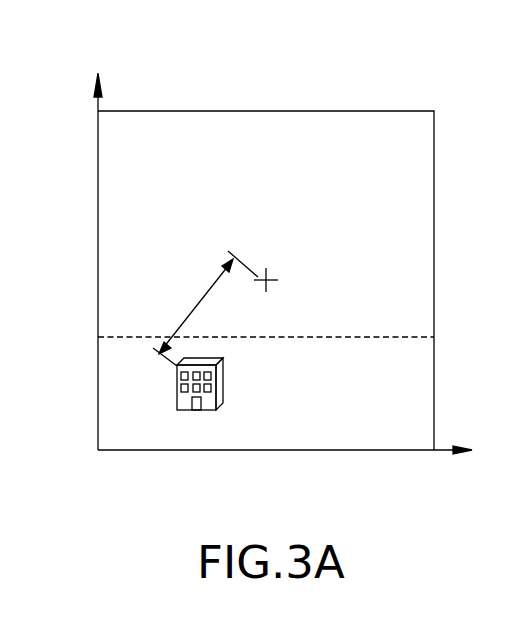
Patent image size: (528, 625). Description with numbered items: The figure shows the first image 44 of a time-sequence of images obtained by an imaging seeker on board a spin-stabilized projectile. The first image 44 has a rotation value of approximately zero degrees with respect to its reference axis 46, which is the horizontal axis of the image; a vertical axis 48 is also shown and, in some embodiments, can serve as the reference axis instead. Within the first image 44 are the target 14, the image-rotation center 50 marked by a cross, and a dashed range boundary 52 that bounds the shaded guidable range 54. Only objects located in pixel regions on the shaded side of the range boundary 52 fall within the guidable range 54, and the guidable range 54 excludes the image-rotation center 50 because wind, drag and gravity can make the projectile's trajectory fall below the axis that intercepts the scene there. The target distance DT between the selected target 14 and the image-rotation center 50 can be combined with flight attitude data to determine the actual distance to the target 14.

The target 14 is at (220, 382).
The first image 44 is at (320, 124).
The reference axis 46 is at (380, 450).
The vertical axis 48 is at (97, 168).
The image-rotation center 50 is at (279, 266).
The range boundary 52 is at (354, 329).
The guidable range 54 is at (378, 401).
The target distance DT is at (205, 308).